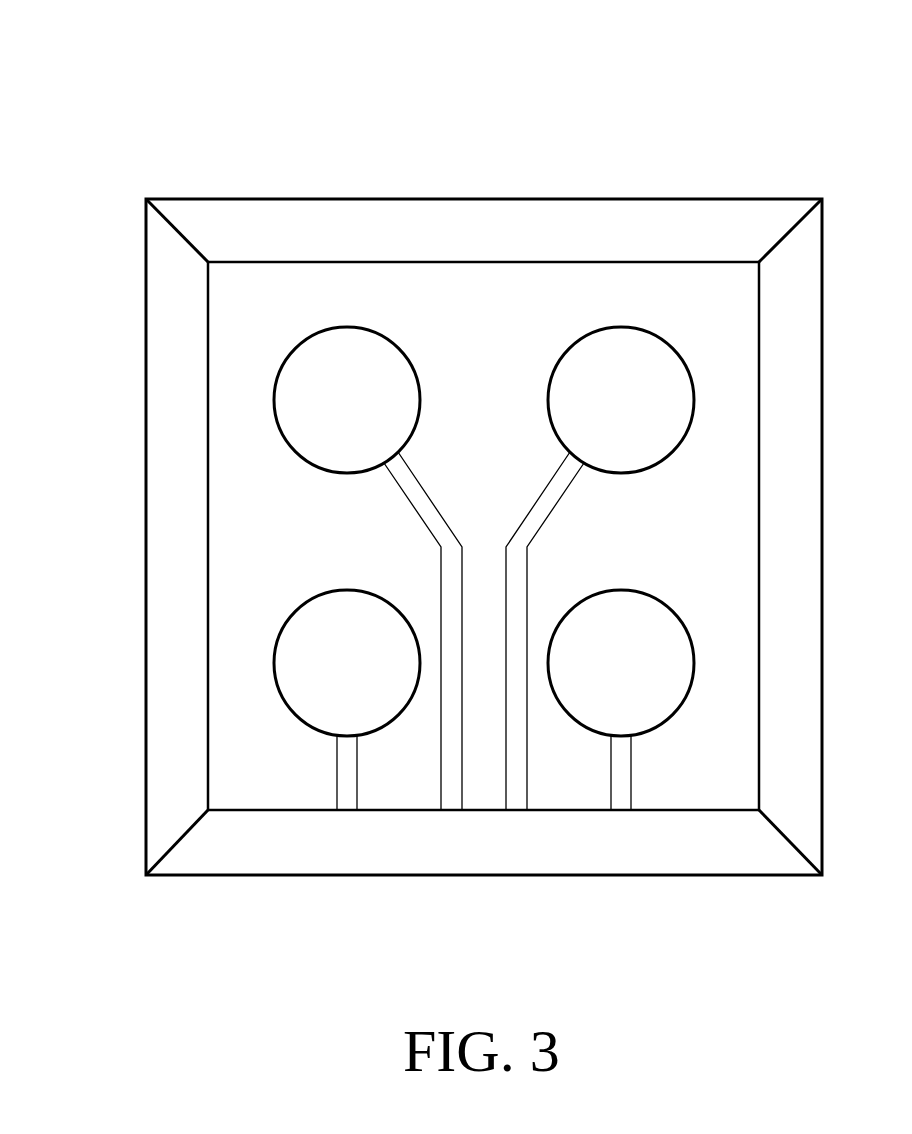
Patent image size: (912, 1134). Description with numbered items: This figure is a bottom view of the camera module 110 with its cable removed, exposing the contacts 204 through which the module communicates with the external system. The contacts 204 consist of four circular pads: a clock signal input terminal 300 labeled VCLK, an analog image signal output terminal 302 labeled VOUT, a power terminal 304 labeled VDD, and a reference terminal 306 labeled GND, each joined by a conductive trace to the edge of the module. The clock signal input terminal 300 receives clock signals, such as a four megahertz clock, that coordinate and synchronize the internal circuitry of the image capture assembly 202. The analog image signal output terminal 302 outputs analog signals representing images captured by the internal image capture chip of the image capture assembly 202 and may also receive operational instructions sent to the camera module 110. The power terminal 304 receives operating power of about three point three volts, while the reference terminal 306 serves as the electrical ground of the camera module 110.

The camera module 110 is at (79, 86).
The image capture assembly 202 is at (239, 554).
The contacts 204 is at (259, 293).
The clock signal input terminal 300 is at (624, 621).
The analog image signal output terminal 302 is at (348, 621).
The power terminal 304 is at (342, 441).
The reference terminal 306 is at (618, 441).